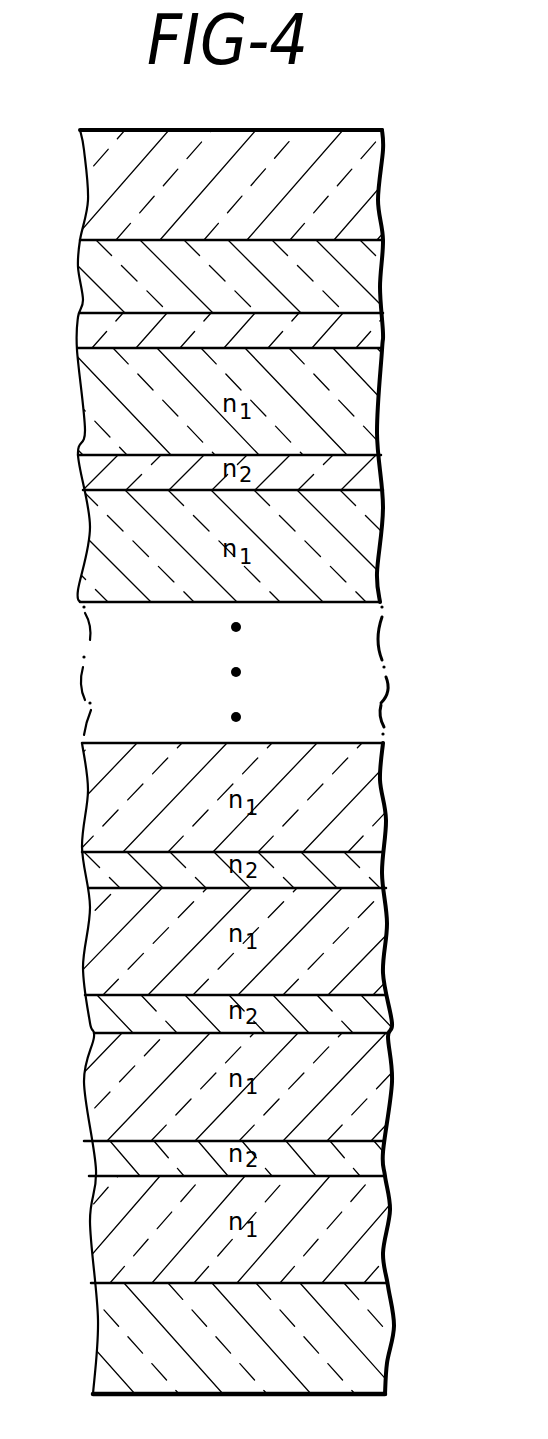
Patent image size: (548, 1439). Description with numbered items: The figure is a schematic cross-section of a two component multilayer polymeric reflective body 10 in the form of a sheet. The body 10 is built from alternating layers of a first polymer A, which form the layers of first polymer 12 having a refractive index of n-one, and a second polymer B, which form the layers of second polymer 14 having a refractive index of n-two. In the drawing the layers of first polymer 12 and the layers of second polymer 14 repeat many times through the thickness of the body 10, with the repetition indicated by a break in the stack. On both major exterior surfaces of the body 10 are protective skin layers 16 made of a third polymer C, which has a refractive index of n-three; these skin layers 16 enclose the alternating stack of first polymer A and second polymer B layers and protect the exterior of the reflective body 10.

The multilayer reflective polymer body 10 is at (373, 125).
The first polymer layer 12 is at (90, 257).
The second polymer layer 14 is at (90, 330).
The protective skin layer 16 is at (90, 153).
The first polymer A is at (367, 278).
The second polymer B is at (370, 336).
The third polymer C is at (368, 176).